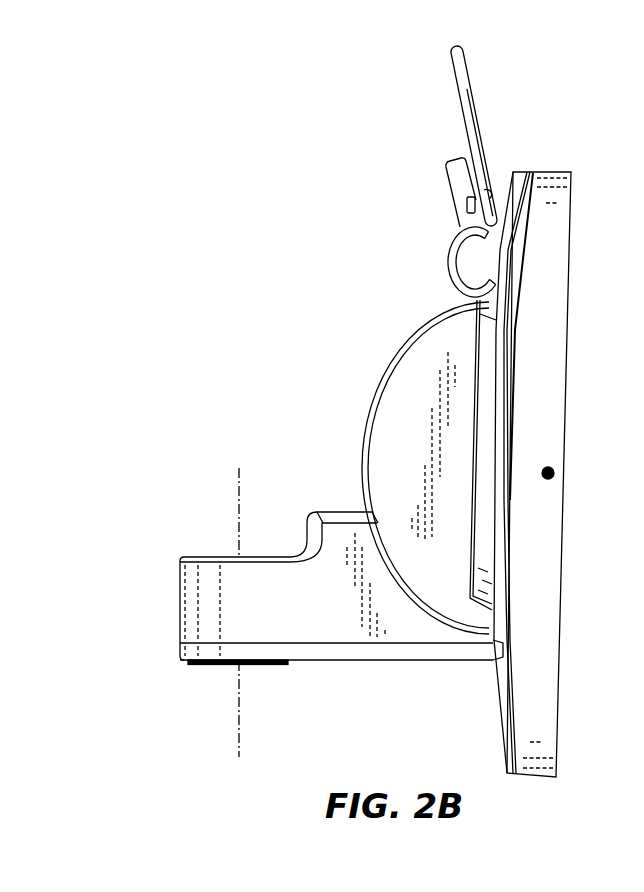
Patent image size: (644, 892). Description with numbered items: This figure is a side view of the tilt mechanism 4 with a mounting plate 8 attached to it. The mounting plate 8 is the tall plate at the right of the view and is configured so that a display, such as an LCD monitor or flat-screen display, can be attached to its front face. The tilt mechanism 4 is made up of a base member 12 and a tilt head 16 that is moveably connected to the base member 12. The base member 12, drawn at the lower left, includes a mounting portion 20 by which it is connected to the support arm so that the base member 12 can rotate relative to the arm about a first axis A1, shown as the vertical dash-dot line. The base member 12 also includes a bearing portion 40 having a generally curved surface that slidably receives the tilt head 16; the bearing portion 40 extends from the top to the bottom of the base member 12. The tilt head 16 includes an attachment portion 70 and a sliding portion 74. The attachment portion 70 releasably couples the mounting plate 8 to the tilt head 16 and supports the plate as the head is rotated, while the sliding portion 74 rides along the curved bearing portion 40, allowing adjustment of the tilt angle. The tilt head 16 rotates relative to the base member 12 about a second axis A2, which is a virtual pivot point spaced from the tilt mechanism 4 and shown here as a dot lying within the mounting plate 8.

The tilt mechanism 4 is at (387, 443).
The mounting plate 8 is at (543, 272).
The base member 12 is at (310, 631).
The tilt head 16 is at (424, 185).
The mounting portion 20 is at (210, 592).
The bearing portion 40 is at (410, 617).
The attachment portion 70 is at (460, 323).
The sliding portion 74 is at (420, 383).
The first axis A1 is at (238, 502).
The second axis A2 is at (552, 473).